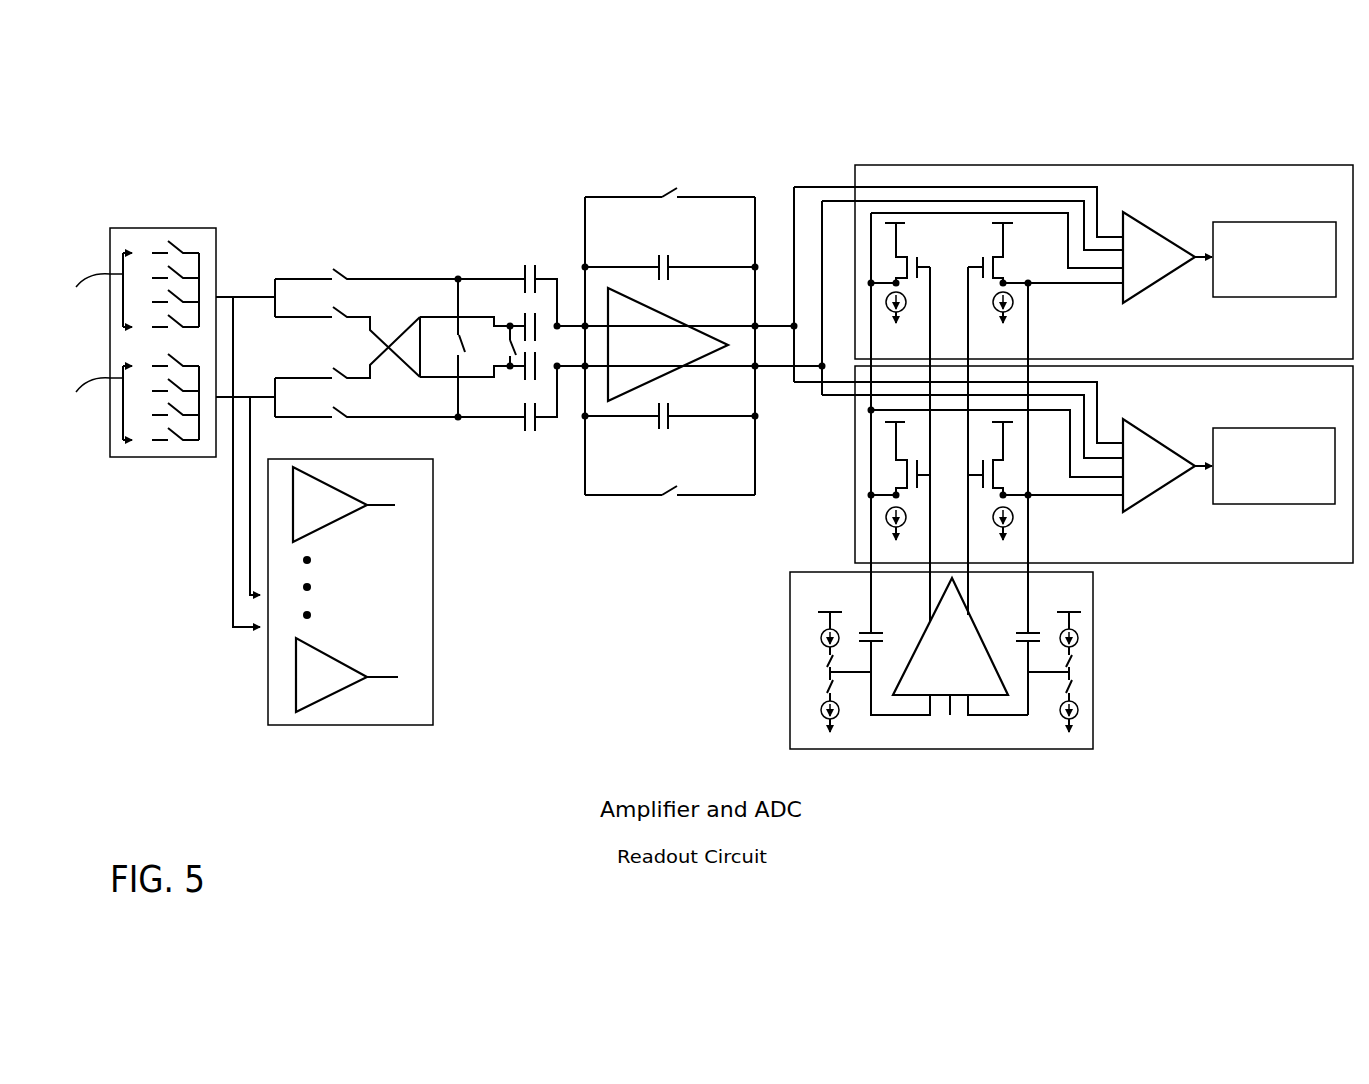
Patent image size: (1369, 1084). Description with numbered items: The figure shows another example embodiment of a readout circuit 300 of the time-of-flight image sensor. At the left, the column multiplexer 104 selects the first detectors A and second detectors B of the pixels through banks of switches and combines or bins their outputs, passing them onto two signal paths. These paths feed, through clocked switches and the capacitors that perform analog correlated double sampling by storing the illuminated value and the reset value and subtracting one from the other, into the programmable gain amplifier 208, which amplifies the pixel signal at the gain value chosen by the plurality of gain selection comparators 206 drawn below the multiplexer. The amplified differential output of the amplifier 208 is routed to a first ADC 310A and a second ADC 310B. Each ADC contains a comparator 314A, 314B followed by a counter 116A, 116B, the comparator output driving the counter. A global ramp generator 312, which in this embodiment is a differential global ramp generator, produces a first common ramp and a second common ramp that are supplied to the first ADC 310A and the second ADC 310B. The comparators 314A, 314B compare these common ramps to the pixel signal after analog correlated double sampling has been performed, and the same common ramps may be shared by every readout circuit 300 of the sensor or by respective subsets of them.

The readout circuit 300 is at (134, 170).
The multiplexer 104 is at (207, 457).
The gain selection comparators 206 is at (430, 725).
The programmable gain amplifier 208 is at (607, 305).
The first ADC 310A is at (1098, 165).
The second ADC 310B is at (1107, 563).
The counter 116A is at (1255, 222).
The counter 116B is at (1228, 504).
The comparator 314A is at (1158, 284).
The comparator 314B is at (1160, 493).
The global ramp generator 312 is at (1068, 749).